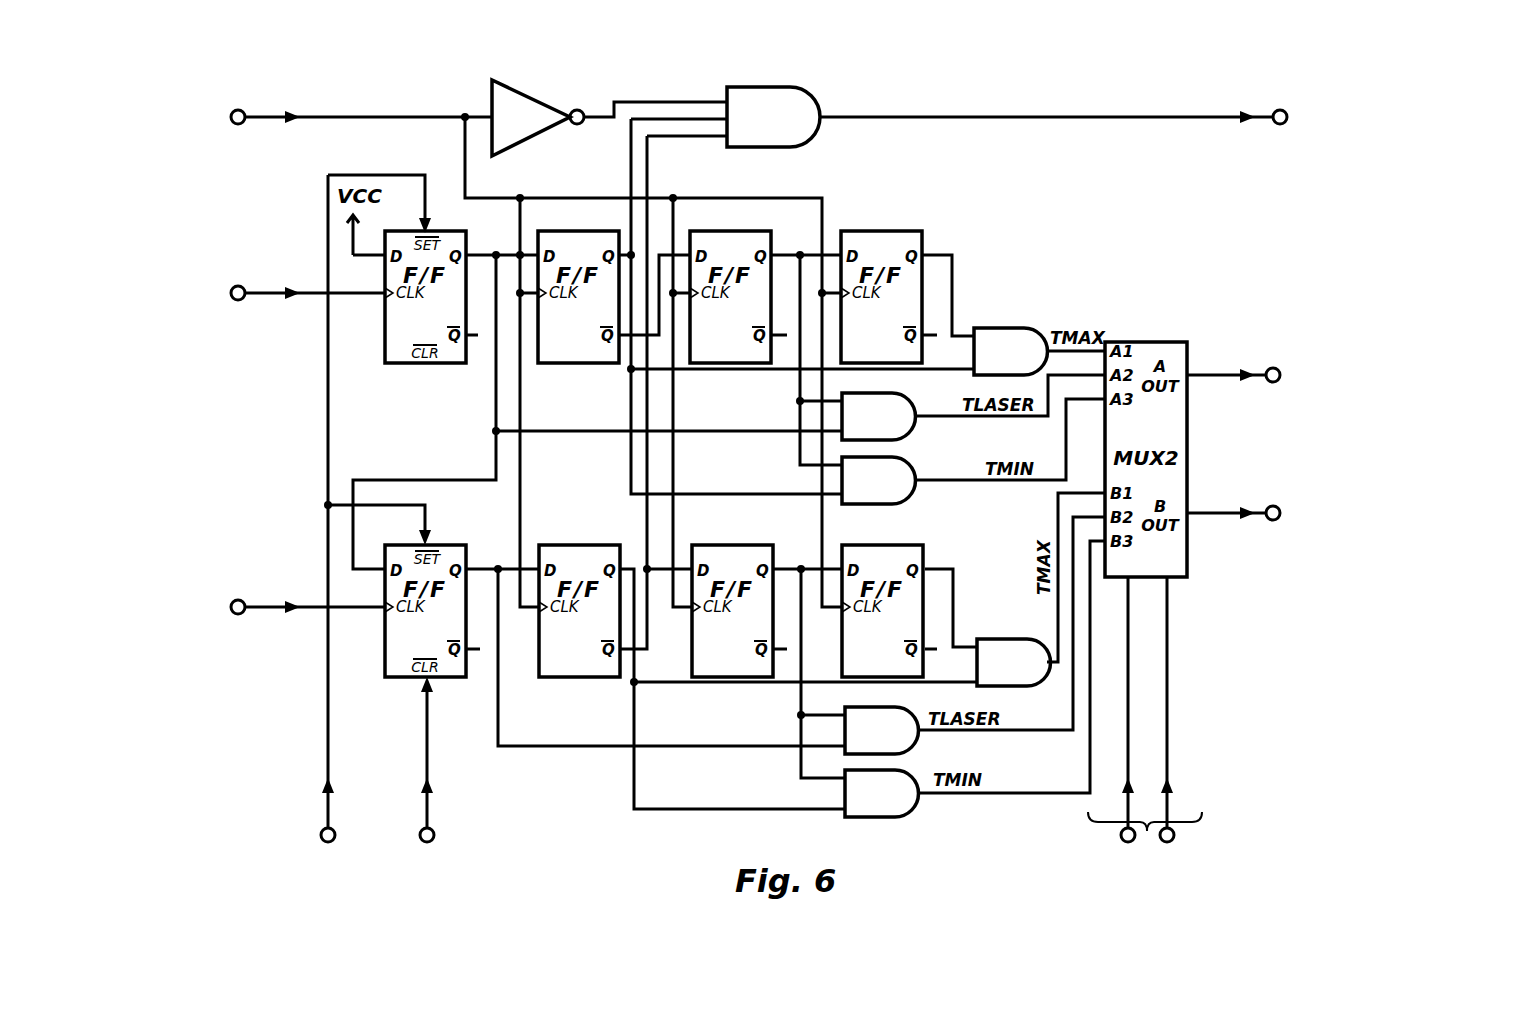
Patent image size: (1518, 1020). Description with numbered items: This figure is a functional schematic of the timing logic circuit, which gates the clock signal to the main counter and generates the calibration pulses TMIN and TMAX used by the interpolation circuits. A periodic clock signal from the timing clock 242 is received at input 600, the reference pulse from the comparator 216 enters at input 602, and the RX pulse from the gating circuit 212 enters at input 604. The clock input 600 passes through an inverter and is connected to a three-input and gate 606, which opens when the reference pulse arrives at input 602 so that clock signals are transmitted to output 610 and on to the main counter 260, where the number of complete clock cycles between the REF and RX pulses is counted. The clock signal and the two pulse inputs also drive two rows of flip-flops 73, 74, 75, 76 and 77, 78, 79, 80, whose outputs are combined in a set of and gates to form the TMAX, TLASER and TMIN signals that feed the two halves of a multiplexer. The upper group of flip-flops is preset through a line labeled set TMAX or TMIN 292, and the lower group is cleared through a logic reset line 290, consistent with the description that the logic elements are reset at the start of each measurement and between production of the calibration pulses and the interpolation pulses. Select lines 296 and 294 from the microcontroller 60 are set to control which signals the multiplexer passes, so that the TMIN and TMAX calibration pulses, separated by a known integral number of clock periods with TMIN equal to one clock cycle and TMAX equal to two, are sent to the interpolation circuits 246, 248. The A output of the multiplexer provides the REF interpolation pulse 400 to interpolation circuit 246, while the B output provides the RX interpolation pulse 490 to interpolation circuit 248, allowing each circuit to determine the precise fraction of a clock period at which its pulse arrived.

The input 600 is at (240, 110).
The input 602 is at (240, 286).
The input 604 is at (240, 600).
The three-input and gate 606 is at (800, 98).
The output 610 is at (1281, 110).
The flip-flop 73 is at (463, 242).
The flip-flop 74 is at (585, 358).
The flip-flop 75 is at (765, 240).
The flip-flop 76 is at (913, 238).
The flip-flop 77 is at (445, 555).
The flip-flop 78 is at (580, 555).
The flip-flop 79 is at (735, 555).
The flip-flop 80 is at (900, 555).
The REF interpolation pulse 400 is at (1274, 368).
The RX interpolation pulse 490 is at (1274, 506).
The select line 296 is at (1130, 652).
The select line 294 is at (1168, 693).
The set TMAX or TMIN input 292 is at (327, 869).
The logic reset input 290 is at (429, 869).
The timing clock 242 is at (186, 121).
The comparator 216 is at (218, 342).
The gating circuit 212 is at (182, 613).
The main counter 260 is at (1340, 123).
The interpolation circuit 246 is at (1381, 387).
The interpolation circuit 248 is at (1381, 526).
The microcontroller 60 is at (1162, 874).